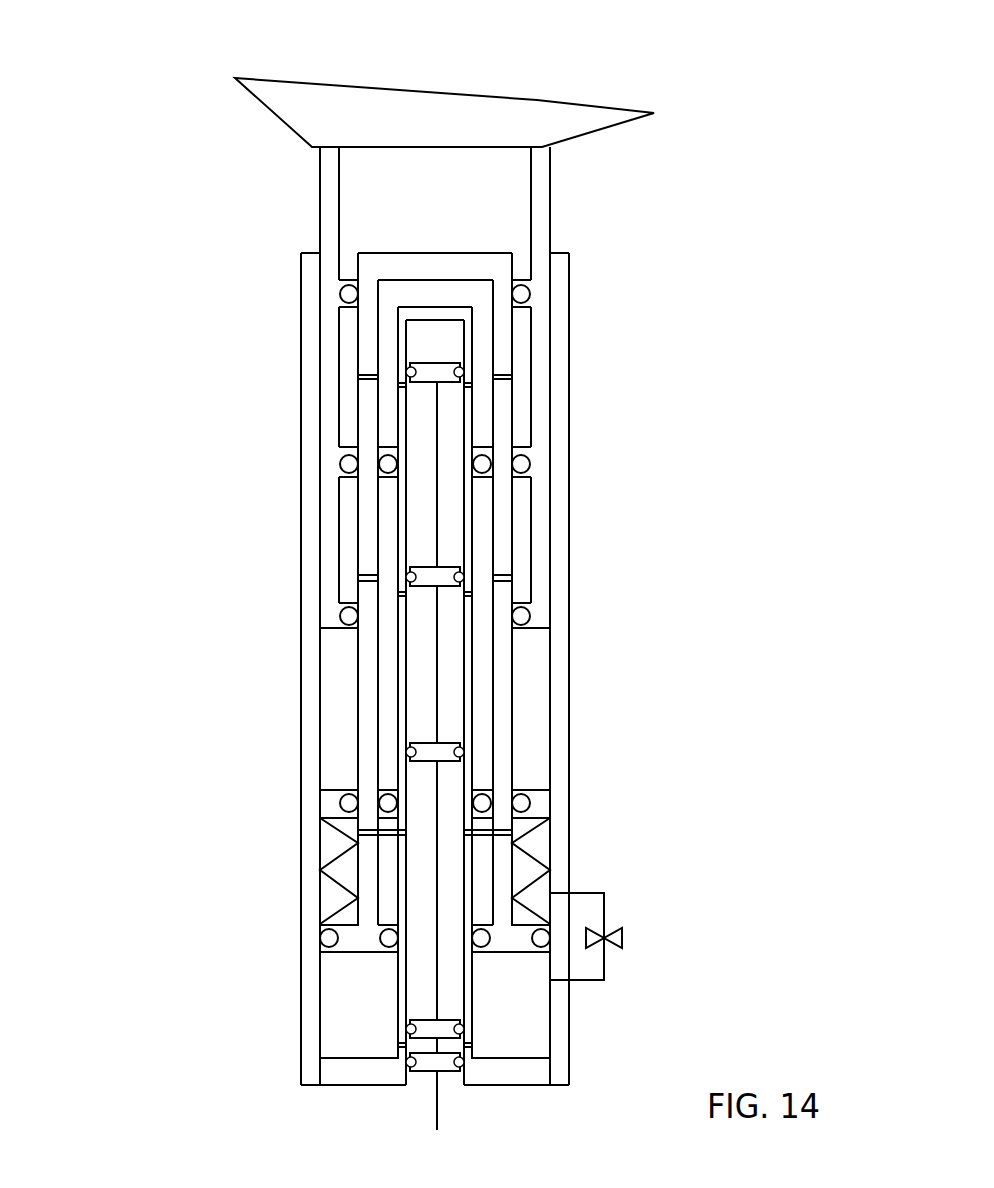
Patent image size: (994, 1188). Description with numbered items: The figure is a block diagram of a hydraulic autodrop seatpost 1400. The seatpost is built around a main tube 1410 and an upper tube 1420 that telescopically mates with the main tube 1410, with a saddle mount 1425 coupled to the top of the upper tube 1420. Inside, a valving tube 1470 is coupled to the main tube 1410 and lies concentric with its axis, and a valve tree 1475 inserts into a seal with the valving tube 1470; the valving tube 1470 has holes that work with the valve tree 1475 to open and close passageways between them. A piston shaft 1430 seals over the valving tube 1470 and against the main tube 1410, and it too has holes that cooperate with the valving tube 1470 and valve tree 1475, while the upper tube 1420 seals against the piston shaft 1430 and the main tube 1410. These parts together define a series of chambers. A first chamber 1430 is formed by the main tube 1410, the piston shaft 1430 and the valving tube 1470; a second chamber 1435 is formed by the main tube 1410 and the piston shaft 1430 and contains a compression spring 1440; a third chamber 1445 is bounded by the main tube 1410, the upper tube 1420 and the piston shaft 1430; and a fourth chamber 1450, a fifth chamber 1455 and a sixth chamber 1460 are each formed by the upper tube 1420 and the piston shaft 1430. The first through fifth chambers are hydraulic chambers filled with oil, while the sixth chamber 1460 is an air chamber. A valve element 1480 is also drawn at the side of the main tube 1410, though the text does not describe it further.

The hydraulic autodrop seatpost 1400 is at (157, 57).
The saddle mount 1425 is at (537, 100).
The upper tube 1420 is at (552, 179).
The sixth chamber 1460 is at (489, 216).
The fifth chamber 1455 is at (523, 357).
The fourth chamber 1450 is at (518, 538).
The main tube 1410 is at (560, 623).
The third chamber 1445 is at (533, 718).
The second chamber 1435 is at (538, 838).
The spring 1440 is at (530, 857).
The valve 1480 is at (620, 930).
The valving tube 1470 is at (403, 1003).
The piston shaft 1430 is at (533, 1043).
The valve tree 1475 is at (440, 1098).